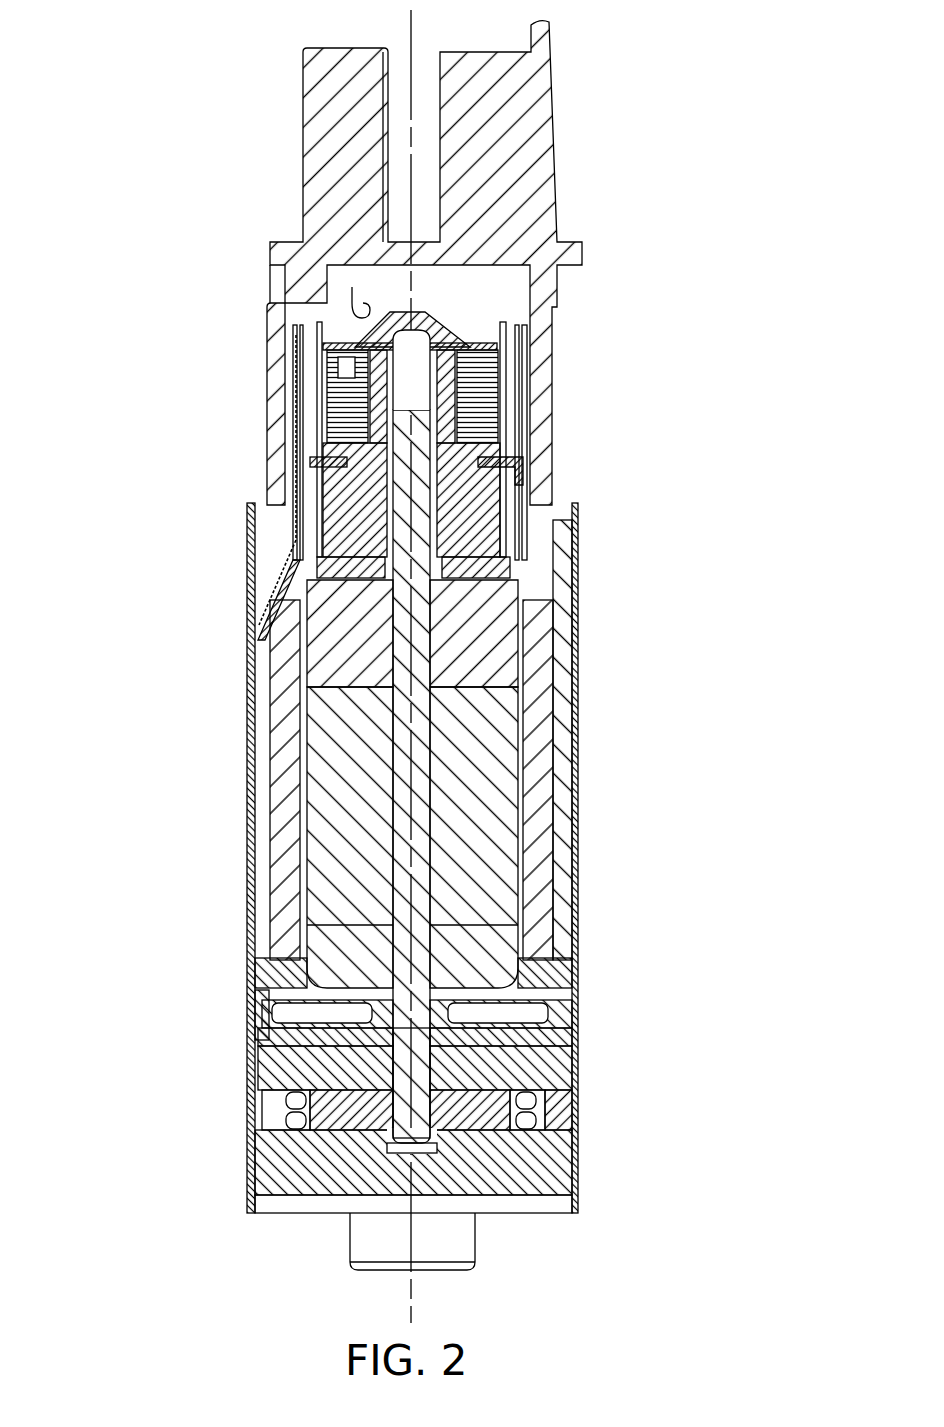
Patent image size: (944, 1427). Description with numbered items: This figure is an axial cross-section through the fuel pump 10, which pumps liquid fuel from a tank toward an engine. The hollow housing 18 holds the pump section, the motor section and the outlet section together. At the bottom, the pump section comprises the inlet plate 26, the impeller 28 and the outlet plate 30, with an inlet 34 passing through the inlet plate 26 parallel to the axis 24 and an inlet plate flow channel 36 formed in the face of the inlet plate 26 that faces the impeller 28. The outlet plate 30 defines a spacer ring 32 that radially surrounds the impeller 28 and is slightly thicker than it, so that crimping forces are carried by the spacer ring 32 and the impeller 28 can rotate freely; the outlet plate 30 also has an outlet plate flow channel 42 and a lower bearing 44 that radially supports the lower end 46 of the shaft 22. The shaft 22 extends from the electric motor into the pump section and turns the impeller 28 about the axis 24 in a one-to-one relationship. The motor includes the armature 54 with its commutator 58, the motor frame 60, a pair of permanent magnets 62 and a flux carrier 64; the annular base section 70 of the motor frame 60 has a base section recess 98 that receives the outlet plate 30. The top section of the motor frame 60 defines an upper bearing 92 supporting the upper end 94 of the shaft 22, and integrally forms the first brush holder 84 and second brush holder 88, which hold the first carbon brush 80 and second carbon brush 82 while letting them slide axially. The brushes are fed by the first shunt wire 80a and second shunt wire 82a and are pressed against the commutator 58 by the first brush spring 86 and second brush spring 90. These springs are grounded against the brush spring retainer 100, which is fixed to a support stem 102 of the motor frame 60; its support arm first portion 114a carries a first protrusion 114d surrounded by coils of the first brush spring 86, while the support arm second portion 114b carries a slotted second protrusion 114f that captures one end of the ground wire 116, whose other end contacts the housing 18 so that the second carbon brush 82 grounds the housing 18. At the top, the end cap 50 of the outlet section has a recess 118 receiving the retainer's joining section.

The fuel pump 10 is at (727, 69).
The housing 18 is at (578, 745).
The shaft 22 is at (552, 742).
The axis 24 is at (411, 1311).
The inlet plate 26 is at (576, 1165).
The impeller 28 is at (582, 1108).
The outlet plate 30 is at (562, 1010).
The spacer ring 32 is at (570, 1090).
The inlet 34 is at (448, 1275).
The inlet plate flow channel 36 is at (286, 1118).
The outlet plate flow channel 42 is at (268, 1085).
The lower bearing 44 is at (395, 1052).
The lower end of shaft 46 is at (582, 1046).
The end cap 50 is at (540, 285).
The armature 54 is at (424, 784).
The commutator 58 is at (325, 565).
The motor frame 60 is at (501, 967).
The permanent magnets 62 is at (278, 790).
The flux carrier 64 is at (560, 850).
The base section 70 is at (560, 970).
The first carbon brush 80 is at (470, 508).
The first shunt wire 80a is at (505, 468).
The second carbon brush 82 is at (272, 439).
The second shunt wire 82a is at (320, 462).
The first brush holder 84 is at (478, 410).
The first brush spring 86 is at (505, 385).
The second brush holder 88 is at (330, 410).
The second brush spring 90 is at (340, 370).
The upper bearing 92 is at (345, 525).
The upper end of shaft 94 is at (428, 525).
The base section recess 98 is at (262, 992).
The brush spring retainer 100 is at (360, 340).
The support stem 102 is at (350, 290).
The support arm first portion 114a is at (519, 340).
The support arm second portion 114b is at (292, 345).
The first protrusion 114d is at (527, 360).
The second protrusion 114f is at (300, 365).
The ground wire 116 is at (272, 605).
The recess 118 is at (455, 315).